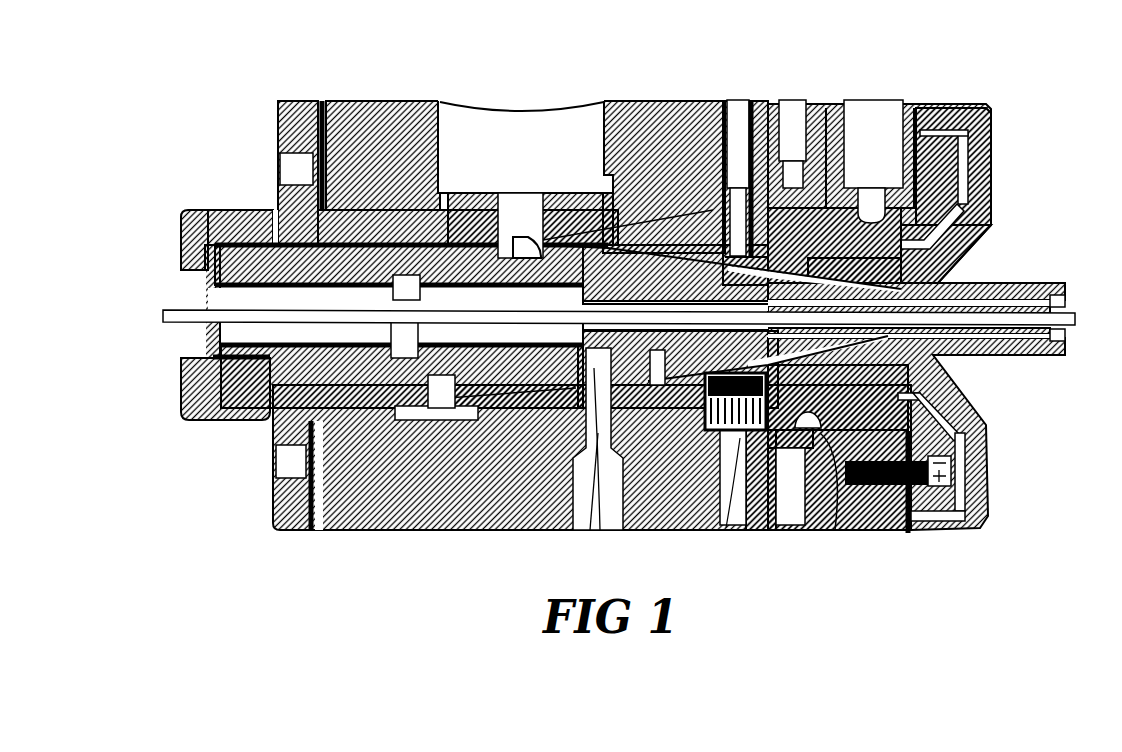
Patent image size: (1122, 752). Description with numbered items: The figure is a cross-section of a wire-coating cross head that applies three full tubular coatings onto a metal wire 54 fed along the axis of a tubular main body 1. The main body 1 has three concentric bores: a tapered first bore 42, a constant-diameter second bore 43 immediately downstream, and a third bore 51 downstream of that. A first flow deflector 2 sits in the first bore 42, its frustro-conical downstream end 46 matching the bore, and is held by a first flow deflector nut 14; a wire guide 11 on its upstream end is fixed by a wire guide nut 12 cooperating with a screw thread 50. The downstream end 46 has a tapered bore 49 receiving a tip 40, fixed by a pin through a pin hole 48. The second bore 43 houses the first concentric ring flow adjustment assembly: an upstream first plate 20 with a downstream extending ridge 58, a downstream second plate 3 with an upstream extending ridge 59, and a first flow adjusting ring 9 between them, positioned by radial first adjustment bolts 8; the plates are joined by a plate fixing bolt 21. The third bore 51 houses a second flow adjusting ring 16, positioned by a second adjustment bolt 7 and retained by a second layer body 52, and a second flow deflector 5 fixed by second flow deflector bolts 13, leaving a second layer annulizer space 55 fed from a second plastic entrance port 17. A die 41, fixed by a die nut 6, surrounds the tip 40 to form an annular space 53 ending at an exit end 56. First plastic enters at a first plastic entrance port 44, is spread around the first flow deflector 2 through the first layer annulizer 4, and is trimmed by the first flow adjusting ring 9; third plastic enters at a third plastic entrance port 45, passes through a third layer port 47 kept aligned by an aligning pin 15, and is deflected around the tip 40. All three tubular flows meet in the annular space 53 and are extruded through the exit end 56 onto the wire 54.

The main body 1 is at (376, 96).
The first flow deflector 2 is at (246, 233).
The second plate 3 is at (800, 372).
The first layer annulizer 4 is at (607, 234).
The second flow deflector 5 is at (975, 150).
The die nut 6 is at (970, 234).
The second adjustment bolt 7 is at (789, 98).
The first adjustment bolts 8 is at (727, 98).
The first flow adjusting ring 9 is at (719, 143).
The wire guide 11 is at (204, 262).
The wire guide nut 12 is at (174, 222).
The second flow deflector bolts 13 is at (937, 478).
The first flow deflector nut 14 is at (292, 97).
The aligning pin 15 is at (434, 405).
The second flow adjusting ring 16 is at (827, 522).
The second plastic entrance port 17 is at (868, 102).
The first plate 20 is at (705, 222).
The plate fixing bolt 21 is at (752, 517).
The tip 40 is at (925, 365).
The die 41 is at (1005, 276).
The first bore 42 is at (485, 390).
The second bore 43 is at (815, 408).
The first plastic entrance port 44 is at (518, 204).
The third plastic entrance port 45 is at (592, 522).
The downstream end 46 is at (418, 258).
The third layer port 47 is at (582, 522).
The pin hole 48 is at (652, 377).
The tapered bore 49 is at (607, 266).
The screw thread 50 is at (250, 395).
The third bore 51 is at (747, 95).
The second layer body 52 is at (858, 522).
The annular space 53 is at (815, 256).
The wire 54 is at (158, 302).
The second layer annulizer space 55 is at (772, 265).
The exit end 56 is at (1060, 292).
The downstream extending ridge 58 is at (840, 178).
The upstream extending ridge 59 is at (752, 398).